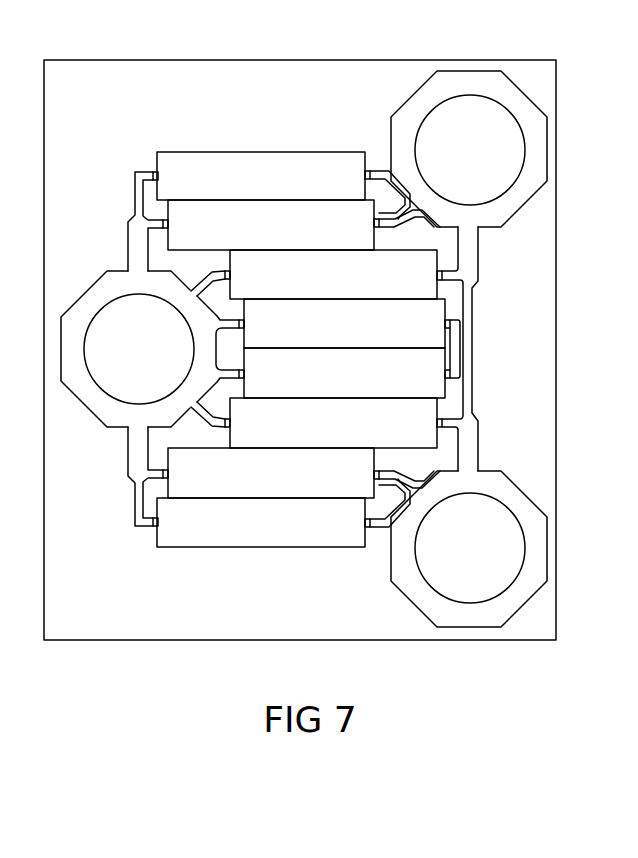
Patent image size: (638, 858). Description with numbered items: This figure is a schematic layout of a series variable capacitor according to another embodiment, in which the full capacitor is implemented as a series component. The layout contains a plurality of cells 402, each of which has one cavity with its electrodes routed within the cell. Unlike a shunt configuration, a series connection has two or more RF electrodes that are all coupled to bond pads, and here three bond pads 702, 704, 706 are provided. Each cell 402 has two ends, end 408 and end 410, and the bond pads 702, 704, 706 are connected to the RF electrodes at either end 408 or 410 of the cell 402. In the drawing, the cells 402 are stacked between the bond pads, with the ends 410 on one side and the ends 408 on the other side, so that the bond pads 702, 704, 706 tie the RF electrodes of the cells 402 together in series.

The cell 402 is at (229, 188).
The end of the cell 408 is at (447, 306).
The end of the cell 410 is at (157, 155).
The bond pad 702 is at (119, 355).
The bond pad 704 is at (451, 158).
The bond pad 706 is at (451, 555).